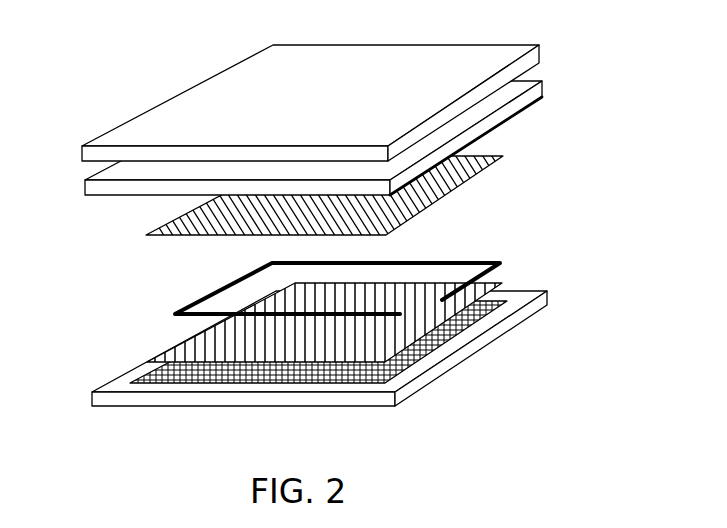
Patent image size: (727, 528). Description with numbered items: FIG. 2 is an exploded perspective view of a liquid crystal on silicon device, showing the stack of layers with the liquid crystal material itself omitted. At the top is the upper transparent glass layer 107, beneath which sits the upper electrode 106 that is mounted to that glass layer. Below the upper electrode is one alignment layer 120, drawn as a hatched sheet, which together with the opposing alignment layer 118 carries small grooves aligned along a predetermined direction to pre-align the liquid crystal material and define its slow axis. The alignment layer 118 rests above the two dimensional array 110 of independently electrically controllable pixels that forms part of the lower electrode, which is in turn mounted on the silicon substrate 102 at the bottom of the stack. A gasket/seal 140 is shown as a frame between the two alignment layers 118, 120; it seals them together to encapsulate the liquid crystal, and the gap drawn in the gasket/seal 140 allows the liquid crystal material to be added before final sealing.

The silicon substrate 102 is at (132, 400).
The upper electrode 106 is at (535, 90).
The upper transparent glass layer 107 is at (506, 56).
The two dimensional array of independently electrically controllable pixels 110 is at (412, 358).
The alignment layer 118 is at (172, 352).
The alignment layer 120 is at (482, 167).
The gasket/seal 140 is at (203, 300).